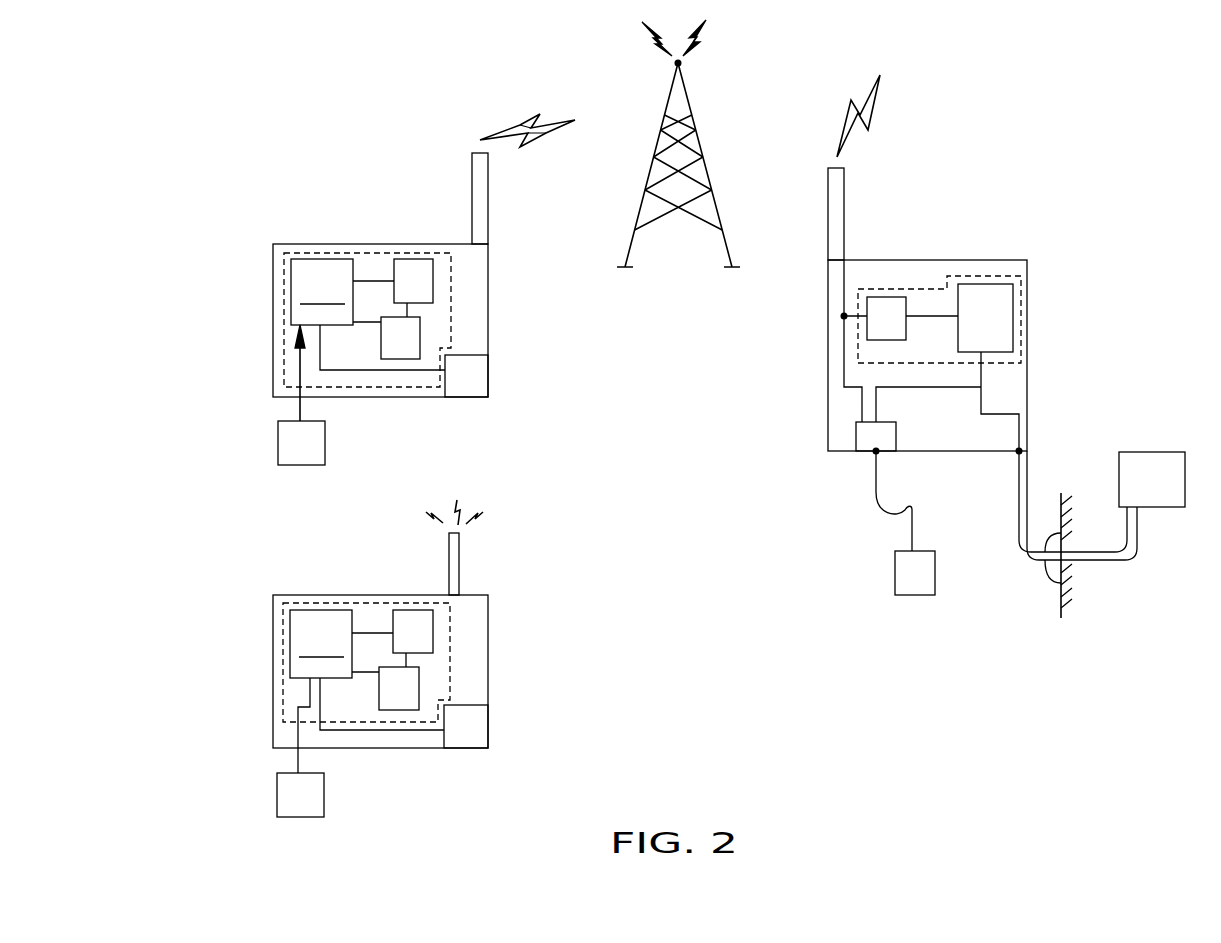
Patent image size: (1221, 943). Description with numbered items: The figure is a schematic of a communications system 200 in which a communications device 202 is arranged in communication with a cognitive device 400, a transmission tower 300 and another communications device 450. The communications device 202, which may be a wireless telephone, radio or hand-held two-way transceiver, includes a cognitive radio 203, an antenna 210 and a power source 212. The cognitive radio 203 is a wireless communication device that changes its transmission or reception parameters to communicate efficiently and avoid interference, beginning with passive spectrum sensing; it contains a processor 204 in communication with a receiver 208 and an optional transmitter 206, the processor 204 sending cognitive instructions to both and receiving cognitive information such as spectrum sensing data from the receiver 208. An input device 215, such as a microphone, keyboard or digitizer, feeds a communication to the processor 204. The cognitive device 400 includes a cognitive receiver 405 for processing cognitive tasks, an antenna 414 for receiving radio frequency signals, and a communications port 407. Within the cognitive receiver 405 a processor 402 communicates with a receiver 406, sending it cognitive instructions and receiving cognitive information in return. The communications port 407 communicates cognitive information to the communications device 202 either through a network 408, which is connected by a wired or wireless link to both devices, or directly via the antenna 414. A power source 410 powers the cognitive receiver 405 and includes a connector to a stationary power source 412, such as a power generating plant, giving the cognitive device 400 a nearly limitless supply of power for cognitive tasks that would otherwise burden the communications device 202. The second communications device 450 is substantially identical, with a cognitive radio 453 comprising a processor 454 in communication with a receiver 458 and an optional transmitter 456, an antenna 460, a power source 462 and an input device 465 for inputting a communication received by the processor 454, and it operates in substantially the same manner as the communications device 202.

The communications system 200 is at (279, 175).
The communications device 202 is at (335, 244).
The cognitive radio 203 is at (453, 300).
The processor 204 is at (295, 272).
The transmitter 206 is at (390, 352).
The receiver 208 is at (400, 262).
The antenna 210 is at (487, 200).
The power source 212 is at (488, 385).
The input device 215 is at (302, 468).
The transmission tower 300 is at (697, 115).
The cognitive device 400 is at (965, 260).
The processor 402 is at (1013, 302).
The cognitive receiver 405 is at (997, 366).
The receiver 406 is at (878, 278).
The communications port 407 is at (898, 437).
The network 408 is at (922, 545).
The power source 410 is at (1030, 490).
The stationary power source 412 is at (1143, 458).
The antenna 414 is at (838, 213).
The communications device 450 is at (333, 595).
The cognitive radio 453 is at (452, 650).
The processor 454 is at (295, 622).
The transmitter 456 is at (388, 703).
The receiver 458 is at (398, 614).
The antenna 460 is at (459, 563).
The power source 462 is at (488, 737).
The input device 465 is at (300, 820).